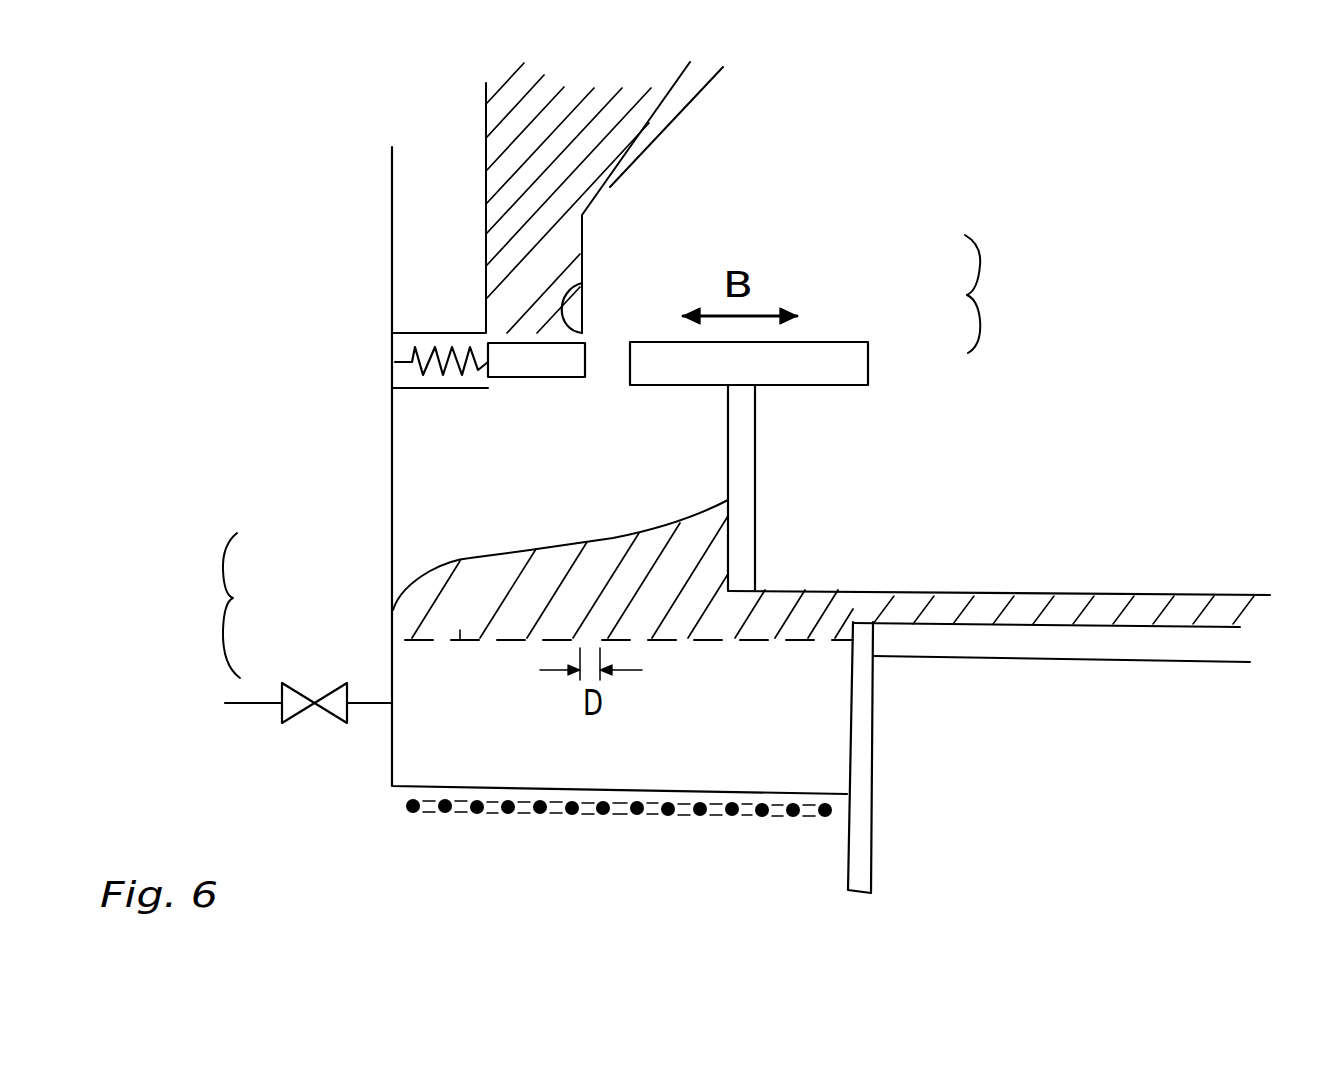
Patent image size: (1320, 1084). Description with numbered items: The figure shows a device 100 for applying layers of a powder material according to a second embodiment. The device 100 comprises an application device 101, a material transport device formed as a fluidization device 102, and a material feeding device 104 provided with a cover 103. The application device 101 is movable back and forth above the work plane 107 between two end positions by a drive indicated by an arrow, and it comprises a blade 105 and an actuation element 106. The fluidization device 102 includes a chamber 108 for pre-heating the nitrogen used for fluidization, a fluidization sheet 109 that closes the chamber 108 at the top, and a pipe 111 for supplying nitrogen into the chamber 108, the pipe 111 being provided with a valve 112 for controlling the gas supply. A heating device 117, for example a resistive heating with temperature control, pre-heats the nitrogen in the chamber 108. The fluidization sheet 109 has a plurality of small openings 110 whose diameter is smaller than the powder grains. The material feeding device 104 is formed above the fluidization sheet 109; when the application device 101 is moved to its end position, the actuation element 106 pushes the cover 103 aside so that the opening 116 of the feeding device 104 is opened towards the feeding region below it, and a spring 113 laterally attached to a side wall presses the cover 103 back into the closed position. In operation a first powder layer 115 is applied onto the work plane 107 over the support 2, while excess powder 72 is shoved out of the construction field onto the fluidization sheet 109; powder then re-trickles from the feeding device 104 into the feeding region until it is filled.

The device for applying layers of a powder material 100 is at (1027, 183).
The application device 101 is at (1009, 294).
The fluidization device 102 is at (190, 605).
The cover 103 is at (538, 362).
The feeding device 104 is at (610, 187).
The blade 105 is at (740, 457).
The actuation element 106 is at (823, 353).
The work plane 107 is at (1140, 627).
The chamber 108 is at (427, 688).
The fluidization sheet 109 is at (462, 640).
The openings 110 is at (443, 644).
The pipe 111 is at (372, 703).
The valve 112 is at (337, 683).
The spring 113 is at (437, 380).
The first powder layer 115 is at (1023, 610).
The opening 116 is at (583, 292).
The heating device 117 is at (557, 815).
The support 2 is at (1100, 638).
The excess powder 72 is at (705, 548).